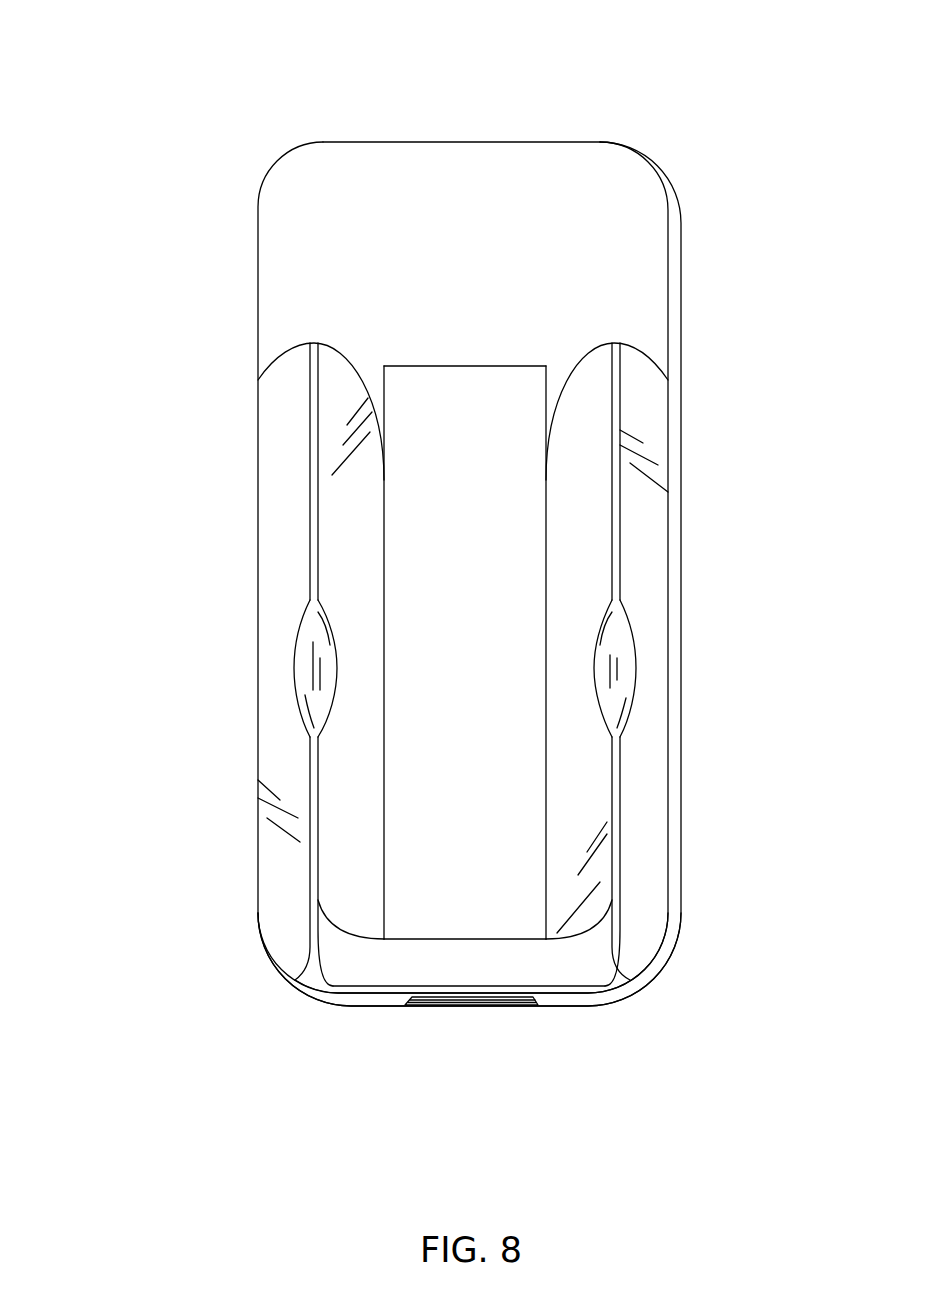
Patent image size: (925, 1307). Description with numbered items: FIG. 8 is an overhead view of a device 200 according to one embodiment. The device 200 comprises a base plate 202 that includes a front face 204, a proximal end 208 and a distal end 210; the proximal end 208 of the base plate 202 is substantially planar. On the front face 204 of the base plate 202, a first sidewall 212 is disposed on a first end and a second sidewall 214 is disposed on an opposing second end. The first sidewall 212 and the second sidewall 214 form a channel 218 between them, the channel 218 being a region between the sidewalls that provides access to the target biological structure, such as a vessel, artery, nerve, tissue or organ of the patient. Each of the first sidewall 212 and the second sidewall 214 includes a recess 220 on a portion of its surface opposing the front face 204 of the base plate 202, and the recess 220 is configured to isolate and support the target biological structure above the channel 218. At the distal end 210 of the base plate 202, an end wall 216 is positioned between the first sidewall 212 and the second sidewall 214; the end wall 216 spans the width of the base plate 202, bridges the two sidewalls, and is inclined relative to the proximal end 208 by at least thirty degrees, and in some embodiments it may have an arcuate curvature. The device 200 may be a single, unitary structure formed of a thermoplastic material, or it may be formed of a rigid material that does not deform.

The device 200 is at (104, 86).
The base plate 202 is at (672, 330).
The front face 204 is at (612, 213).
The proximal end 208 is at (375, 142).
The distal end 210 is at (590, 1000).
The first sidewall 212 is at (650, 553).
The second sidewall 214 is at (270, 550).
The end wall 216 is at (386, 961).
The channel 218 is at (469, 365).
The recess 220 is at (620, 682).